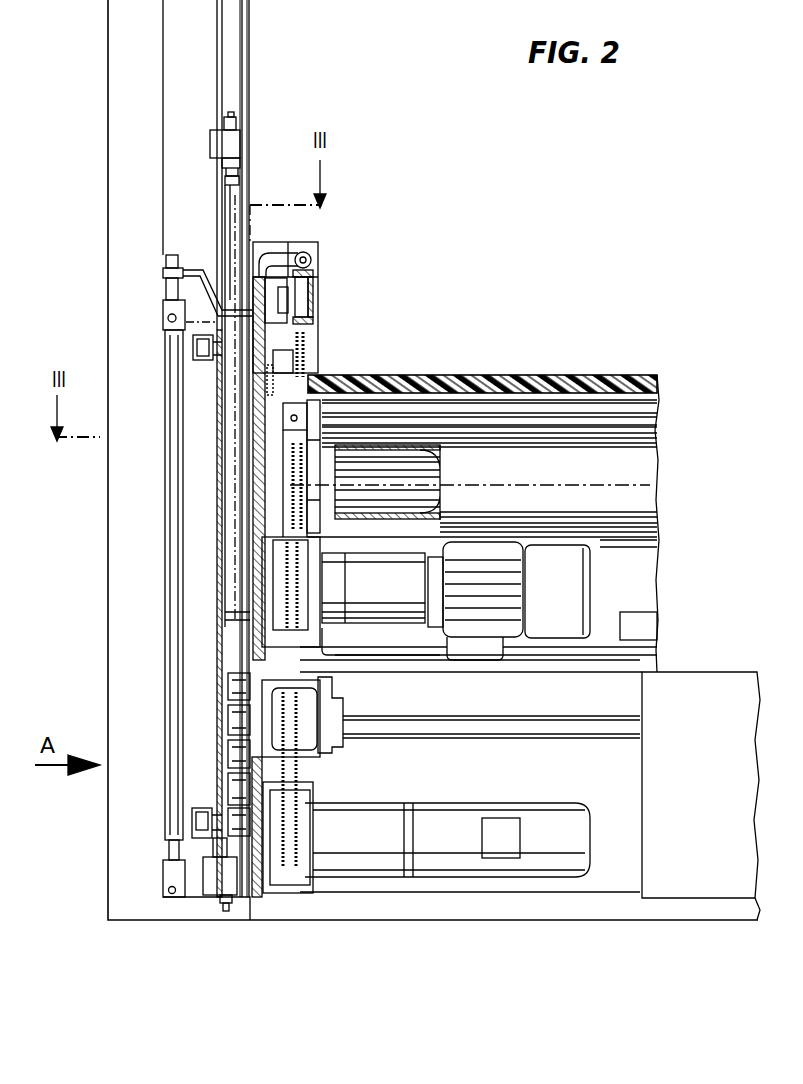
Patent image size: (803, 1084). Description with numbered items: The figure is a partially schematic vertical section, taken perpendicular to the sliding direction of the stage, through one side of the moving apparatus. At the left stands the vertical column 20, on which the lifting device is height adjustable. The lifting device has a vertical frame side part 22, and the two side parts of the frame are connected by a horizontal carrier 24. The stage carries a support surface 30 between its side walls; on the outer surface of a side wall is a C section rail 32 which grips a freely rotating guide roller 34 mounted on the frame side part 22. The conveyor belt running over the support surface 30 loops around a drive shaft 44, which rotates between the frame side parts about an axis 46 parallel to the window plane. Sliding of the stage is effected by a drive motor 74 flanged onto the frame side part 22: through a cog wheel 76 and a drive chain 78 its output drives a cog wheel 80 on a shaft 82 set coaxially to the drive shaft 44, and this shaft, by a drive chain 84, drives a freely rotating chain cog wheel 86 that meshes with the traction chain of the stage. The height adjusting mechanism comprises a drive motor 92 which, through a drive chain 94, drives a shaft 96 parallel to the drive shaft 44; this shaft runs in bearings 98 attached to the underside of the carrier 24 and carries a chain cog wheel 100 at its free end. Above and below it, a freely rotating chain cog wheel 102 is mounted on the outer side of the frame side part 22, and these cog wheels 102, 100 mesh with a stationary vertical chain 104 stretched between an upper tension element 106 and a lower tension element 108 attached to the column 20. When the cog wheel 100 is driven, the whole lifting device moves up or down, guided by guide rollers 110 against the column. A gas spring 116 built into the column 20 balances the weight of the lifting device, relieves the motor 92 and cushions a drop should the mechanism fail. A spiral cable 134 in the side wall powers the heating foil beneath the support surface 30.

The vertical column 20 is at (99, 153).
The frame side part 22 is at (258, 383).
The horizontal carrier 24 is at (655, 637).
The support surface 30 is at (524, 374).
The C section rail 32 is at (297, 318).
The guide roller 34 is at (302, 293).
The drive shaft 44 is at (420, 458).
The axis 46 is at (645, 487).
The drive motor 74 is at (575, 548).
The cog wheel 76 is at (312, 580).
The drive chain 78 is at (262, 525).
The cog wheel 80 is at (270, 500).
The shaft 82 is at (425, 493).
The drive chain 84 is at (270, 433).
The chain cog wheel 86 is at (312, 353).
The drive motor 92 is at (515, 877).
The drive chain 94 is at (305, 768).
The shaft 96 is at (592, 735).
The bearing 98 is at (342, 710).
The chain cog wheel 100 is at (235, 740).
The chain cog wheel 102 is at (232, 686).
The stationary vertical chain 104 is at (232, 197).
The tension element 106 is at (232, 143).
The tension element 108 is at (218, 887).
The guide roller 110 is at (200, 347).
The gas spring 116 is at (166, 470).
The spiral cable 134 is at (310, 258).